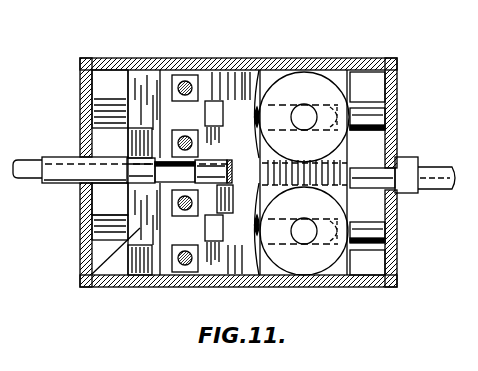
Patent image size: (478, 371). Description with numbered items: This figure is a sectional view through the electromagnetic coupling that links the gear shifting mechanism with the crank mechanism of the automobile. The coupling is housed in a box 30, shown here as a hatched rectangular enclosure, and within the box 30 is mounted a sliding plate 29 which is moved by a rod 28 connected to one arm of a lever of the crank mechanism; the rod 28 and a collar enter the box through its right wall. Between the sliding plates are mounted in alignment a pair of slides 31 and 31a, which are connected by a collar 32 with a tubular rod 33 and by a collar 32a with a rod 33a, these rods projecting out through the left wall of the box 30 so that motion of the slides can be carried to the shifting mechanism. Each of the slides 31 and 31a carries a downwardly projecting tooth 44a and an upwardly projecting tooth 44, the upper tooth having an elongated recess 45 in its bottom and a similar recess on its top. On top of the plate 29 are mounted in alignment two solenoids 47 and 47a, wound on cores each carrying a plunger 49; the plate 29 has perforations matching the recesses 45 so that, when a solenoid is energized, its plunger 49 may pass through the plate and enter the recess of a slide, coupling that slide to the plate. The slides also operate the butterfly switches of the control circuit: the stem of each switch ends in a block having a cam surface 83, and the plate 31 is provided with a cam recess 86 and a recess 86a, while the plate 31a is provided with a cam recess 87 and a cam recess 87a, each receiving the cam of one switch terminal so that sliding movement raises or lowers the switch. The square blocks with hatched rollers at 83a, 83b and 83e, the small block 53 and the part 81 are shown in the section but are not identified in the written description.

The rod 28 is at (440, 176).
The sliding plate 29 is at (350, 158).
The box 30 is at (398, 98).
The slide 31 is at (92, 275).
The slide 31a is at (144, 82).
The collar 32 is at (137, 185).
The collar 32a is at (208, 162).
The tubular rod 33 is at (62, 185).
The rod 33a is at (32, 160).
The upwardly projecting tooth 44 is at (214, 100).
The downwardly projecting tooth 44a is at (350, 91).
The elongated recess 45 is at (258, 70).
The solenoid 47 is at (328, 276).
The solenoid 47a is at (334, 74).
The plunger 49 is at (305, 112).
The bearing block 53 is at (105, 104).
The pin 81 is at (178, 142).
The cam surface 83 is at (178, 272).
The roller 83a is at (186, 80).
The roller 83b is at (203, 143).
The roller 83e is at (178, 204).
The cam recess 86 is at (135, 265).
The recess 86a is at (228, 194).
The cam recess 87 is at (138, 146).
The cam recess 87a is at (247, 70).